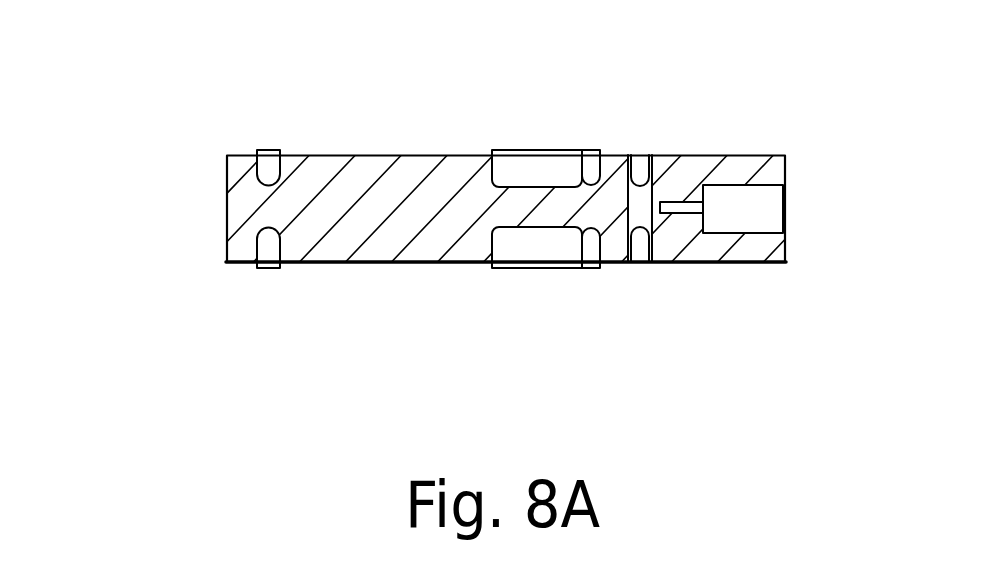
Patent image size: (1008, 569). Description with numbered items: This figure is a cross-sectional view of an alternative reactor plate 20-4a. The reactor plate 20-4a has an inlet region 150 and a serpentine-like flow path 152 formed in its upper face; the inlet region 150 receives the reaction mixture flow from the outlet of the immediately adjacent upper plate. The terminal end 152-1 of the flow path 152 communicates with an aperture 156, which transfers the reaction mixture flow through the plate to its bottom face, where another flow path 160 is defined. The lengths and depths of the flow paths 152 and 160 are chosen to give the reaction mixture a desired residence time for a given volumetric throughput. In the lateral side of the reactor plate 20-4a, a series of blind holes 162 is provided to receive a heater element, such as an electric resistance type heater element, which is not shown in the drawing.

The reactor plate 20-4a is at (221, 352).
The inlet region 150 is at (538, 168).
The serpentine-like flow path 152 is at (266, 162).
The terminal end 152-1 is at (640, 167).
The aperture 156 is at (638, 207).
The flow path 160 is at (268, 250).
The blind holes 162 is at (750, 202).